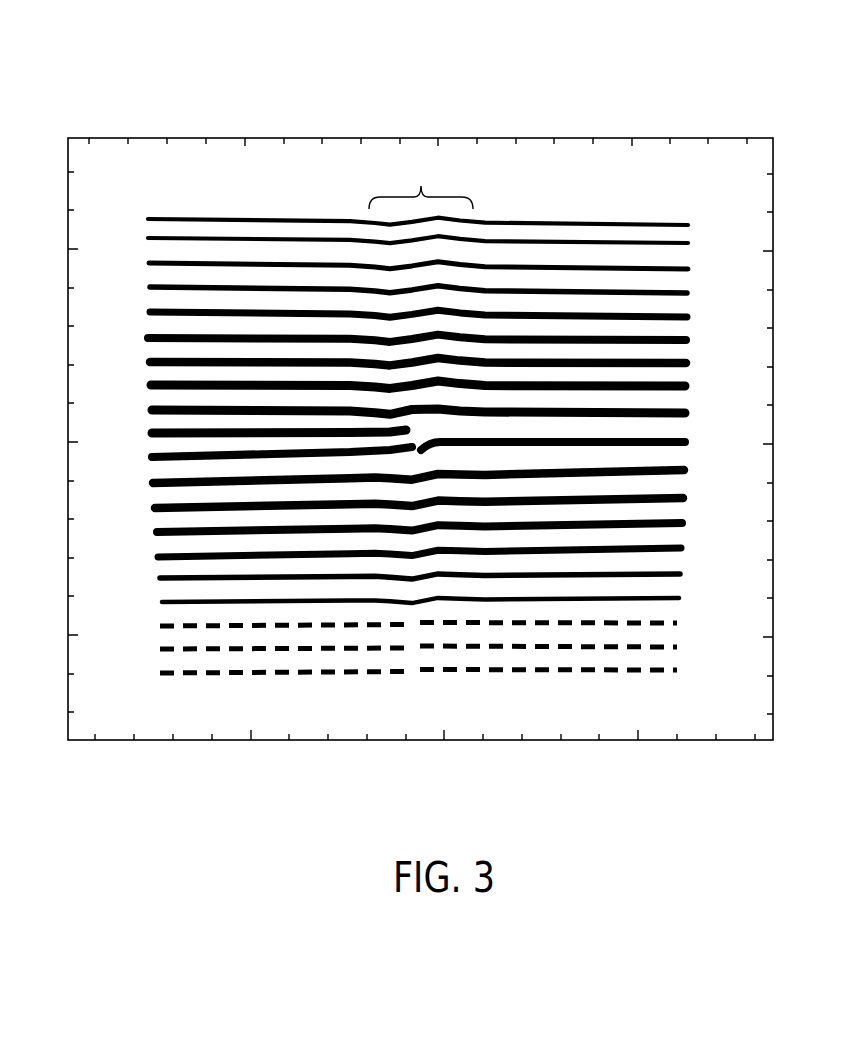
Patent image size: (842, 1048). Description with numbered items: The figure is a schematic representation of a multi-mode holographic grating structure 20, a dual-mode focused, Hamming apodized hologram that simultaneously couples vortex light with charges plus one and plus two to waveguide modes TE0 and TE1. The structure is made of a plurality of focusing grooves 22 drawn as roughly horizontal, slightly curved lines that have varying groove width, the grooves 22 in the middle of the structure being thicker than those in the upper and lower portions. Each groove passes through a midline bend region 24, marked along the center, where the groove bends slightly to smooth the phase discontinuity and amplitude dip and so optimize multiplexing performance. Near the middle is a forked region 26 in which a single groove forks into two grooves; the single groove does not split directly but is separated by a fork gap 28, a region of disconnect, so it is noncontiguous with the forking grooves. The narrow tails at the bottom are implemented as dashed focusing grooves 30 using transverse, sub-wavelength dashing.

The multi-mode holographic grating structure 20 is at (92, 21).
The grooves 22 is at (240, 238).
The midline bend region 24 is at (421, 180).
The forked region 26 is at (402, 417).
The fork gap 28 is at (423, 416).
The dashed focusing grooves 30 is at (177, 628).